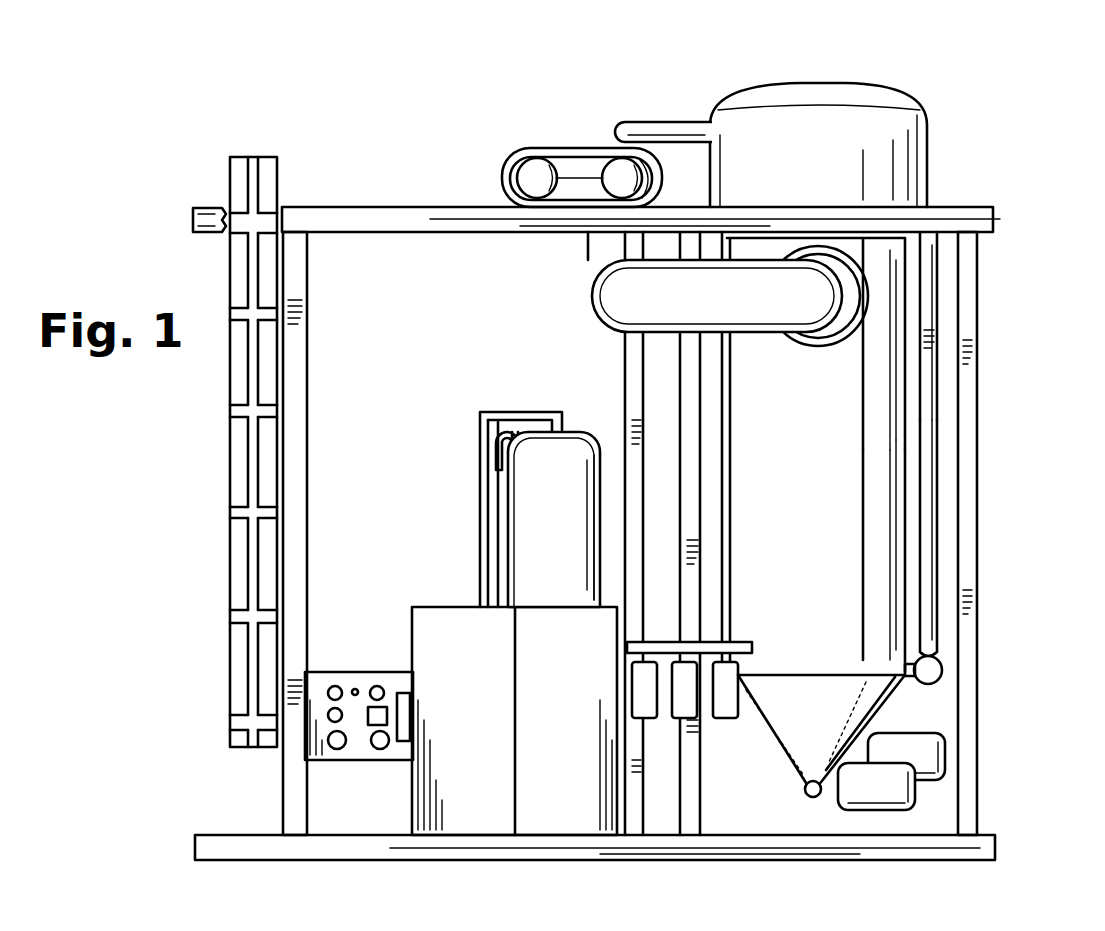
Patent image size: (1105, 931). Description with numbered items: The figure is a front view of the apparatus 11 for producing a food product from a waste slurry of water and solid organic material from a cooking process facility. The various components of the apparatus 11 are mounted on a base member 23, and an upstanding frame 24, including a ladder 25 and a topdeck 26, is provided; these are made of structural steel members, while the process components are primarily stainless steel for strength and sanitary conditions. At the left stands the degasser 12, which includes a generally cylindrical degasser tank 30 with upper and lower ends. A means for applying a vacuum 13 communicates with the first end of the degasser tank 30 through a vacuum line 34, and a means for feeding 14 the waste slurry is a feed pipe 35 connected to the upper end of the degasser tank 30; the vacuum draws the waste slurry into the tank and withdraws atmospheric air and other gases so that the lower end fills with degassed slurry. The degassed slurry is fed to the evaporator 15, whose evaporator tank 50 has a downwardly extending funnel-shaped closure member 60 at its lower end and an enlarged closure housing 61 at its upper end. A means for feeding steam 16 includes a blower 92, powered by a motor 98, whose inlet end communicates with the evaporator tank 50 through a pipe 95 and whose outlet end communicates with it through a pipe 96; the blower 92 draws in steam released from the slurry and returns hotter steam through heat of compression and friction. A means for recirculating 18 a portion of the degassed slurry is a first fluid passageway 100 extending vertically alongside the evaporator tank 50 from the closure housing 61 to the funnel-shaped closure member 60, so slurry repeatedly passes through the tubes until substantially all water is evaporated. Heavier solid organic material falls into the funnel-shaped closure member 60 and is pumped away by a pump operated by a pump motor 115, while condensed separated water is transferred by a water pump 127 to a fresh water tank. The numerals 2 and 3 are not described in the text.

The hoist column assembly 2 is at (205, 553).
The frame 3 is at (1002, 564).
The apparatus 11 is at (1016, 217).
The degasser 12 is at (577, 420).
The means for applying a vacuum 13 is at (466, 573).
The means for feeding the waste slurry 14 is at (530, 412).
The evaporator 15 is at (918, 394).
The means for feeding steam 16 is at (545, 133).
The means for recirculating 18 is at (950, 434).
The base member 23 is at (995, 846).
The upstanding frame 24 is at (307, 533).
The ladder 25 is at (232, 620).
The topdeck 26 is at (936, 214).
The degasser tank 30 is at (601, 490).
The vacuum line 34 is at (480, 493).
The feed pipe 35 is at (491, 437).
The evaporator tank 50 is at (905, 506).
The funnel-shaped closure member 60 is at (768, 740).
The closure housing 61 is at (930, 127).
The blower 92 is at (604, 160).
The pipe 95 is at (673, 121).
The pipe 96 is at (757, 333).
The motor 98 is at (506, 176).
The first fluid passageway 100 is at (933, 335).
The pump motor 115 is at (910, 733).
The water pump 127 is at (903, 765).